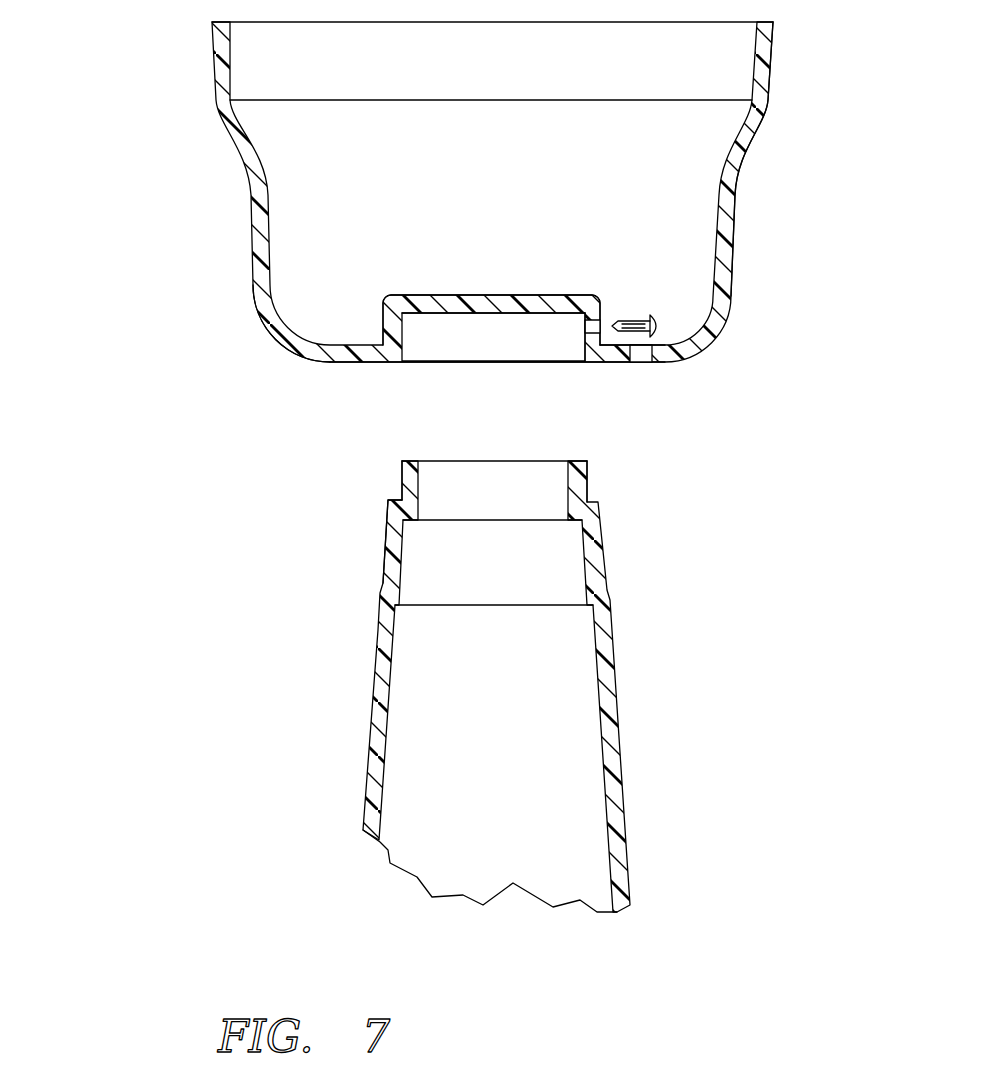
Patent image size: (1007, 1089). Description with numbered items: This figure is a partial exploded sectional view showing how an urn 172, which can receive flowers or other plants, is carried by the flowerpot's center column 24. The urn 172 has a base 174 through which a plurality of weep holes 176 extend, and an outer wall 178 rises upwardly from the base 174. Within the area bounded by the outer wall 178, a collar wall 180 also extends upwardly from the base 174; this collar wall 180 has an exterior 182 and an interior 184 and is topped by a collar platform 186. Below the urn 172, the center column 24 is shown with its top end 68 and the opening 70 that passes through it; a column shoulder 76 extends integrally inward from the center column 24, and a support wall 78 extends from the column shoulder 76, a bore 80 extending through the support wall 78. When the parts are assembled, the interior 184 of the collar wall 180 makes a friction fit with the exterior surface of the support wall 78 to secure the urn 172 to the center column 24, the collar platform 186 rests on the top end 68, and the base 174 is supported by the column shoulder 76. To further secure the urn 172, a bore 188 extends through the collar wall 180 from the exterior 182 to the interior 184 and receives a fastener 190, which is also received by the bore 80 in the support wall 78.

The center column 24 is at (642, 750).
The top end 68 is at (410, 461).
The opening 70 is at (112, 494).
The column shoulder 76 is at (395, 500).
The support wall 78 is at (400, 480).
The bore 80 is at (580, 482).
The urn 172 is at (765, 150).
The base 174 is at (660, 362).
The weep holes 176 is at (333, 368).
The outer wall 178 is at (735, 218).
The collar wall 180 is at (378, 325).
The exterior 182 is at (600, 312).
The interior 184 is at (585, 345).
The collar platform 186 is at (476, 295).
The bore 188 is at (585, 323).
The fastener 190 is at (656, 320).